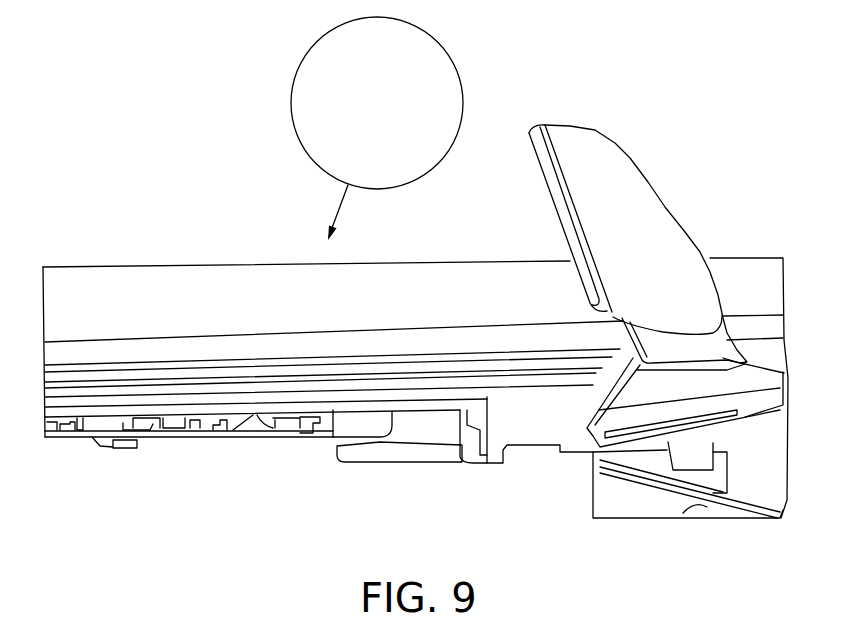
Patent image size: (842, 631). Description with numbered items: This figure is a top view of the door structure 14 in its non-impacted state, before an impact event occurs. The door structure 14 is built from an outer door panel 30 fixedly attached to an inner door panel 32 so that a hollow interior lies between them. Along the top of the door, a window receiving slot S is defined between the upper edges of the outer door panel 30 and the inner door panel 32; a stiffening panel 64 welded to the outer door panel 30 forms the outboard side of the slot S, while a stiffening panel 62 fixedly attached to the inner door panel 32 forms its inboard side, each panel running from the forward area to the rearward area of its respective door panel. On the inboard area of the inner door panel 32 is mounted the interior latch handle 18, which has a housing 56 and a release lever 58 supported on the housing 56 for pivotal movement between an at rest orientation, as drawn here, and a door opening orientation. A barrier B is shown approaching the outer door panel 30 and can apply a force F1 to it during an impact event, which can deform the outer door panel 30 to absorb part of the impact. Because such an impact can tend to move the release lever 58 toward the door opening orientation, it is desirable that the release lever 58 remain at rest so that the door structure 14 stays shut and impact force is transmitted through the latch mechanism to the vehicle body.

The door structure 14 is at (475, 252).
The outer door panel 30 is at (220, 298).
The panel 64 is at (165, 367).
The panel 62 is at (193, 383).
The inner door panel 32 is at (322, 417).
The housing 56 is at (365, 422).
The release lever 58 is at (412, 465).
The interior latch handle 18 is at (462, 470).
The window receiving slot S is at (530, 380).
The barrier B is at (462, 93).
The force F1 is at (337, 203).